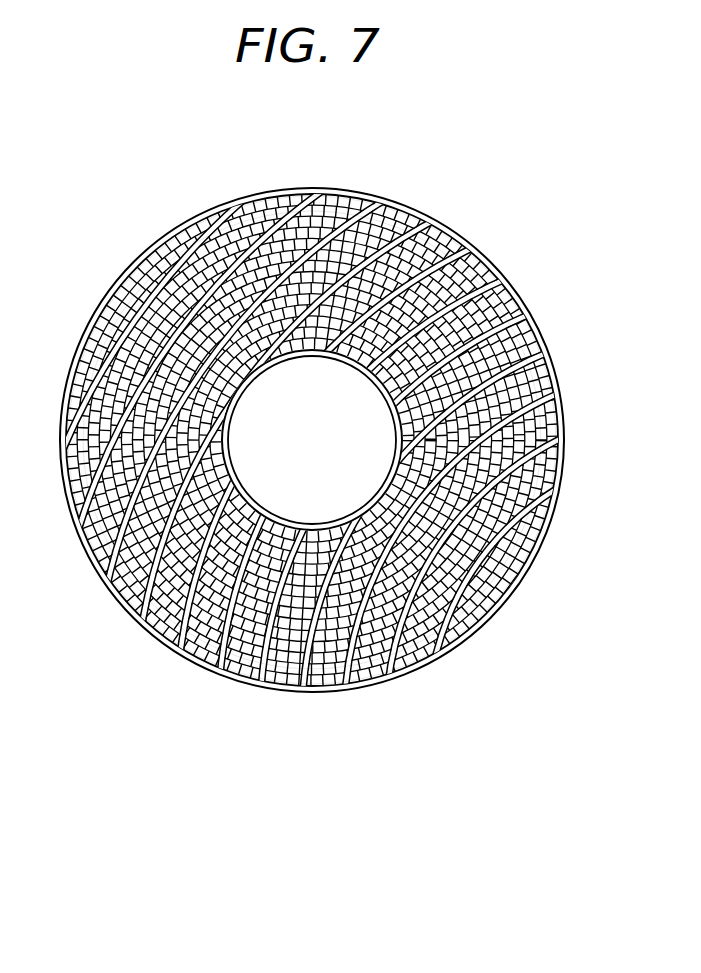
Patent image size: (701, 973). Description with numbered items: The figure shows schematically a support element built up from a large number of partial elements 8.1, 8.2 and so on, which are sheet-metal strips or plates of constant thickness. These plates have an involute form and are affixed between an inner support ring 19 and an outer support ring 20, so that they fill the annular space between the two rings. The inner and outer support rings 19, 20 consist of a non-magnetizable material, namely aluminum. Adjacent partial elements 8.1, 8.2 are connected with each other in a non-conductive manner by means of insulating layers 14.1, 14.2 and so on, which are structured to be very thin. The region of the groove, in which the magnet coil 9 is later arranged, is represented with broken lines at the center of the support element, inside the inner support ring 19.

The partial element 8.1 is at (335, 192).
The partial element 8.2 is at (433, 221).
The magnet coil 9 is at (467, 502).
The insulating layer 14.1 is at (390, 203).
The insulating layer 14.2 is at (480, 252).
The inner support ring 19 is at (242, 680).
The outer support ring 20 is at (117, 588).